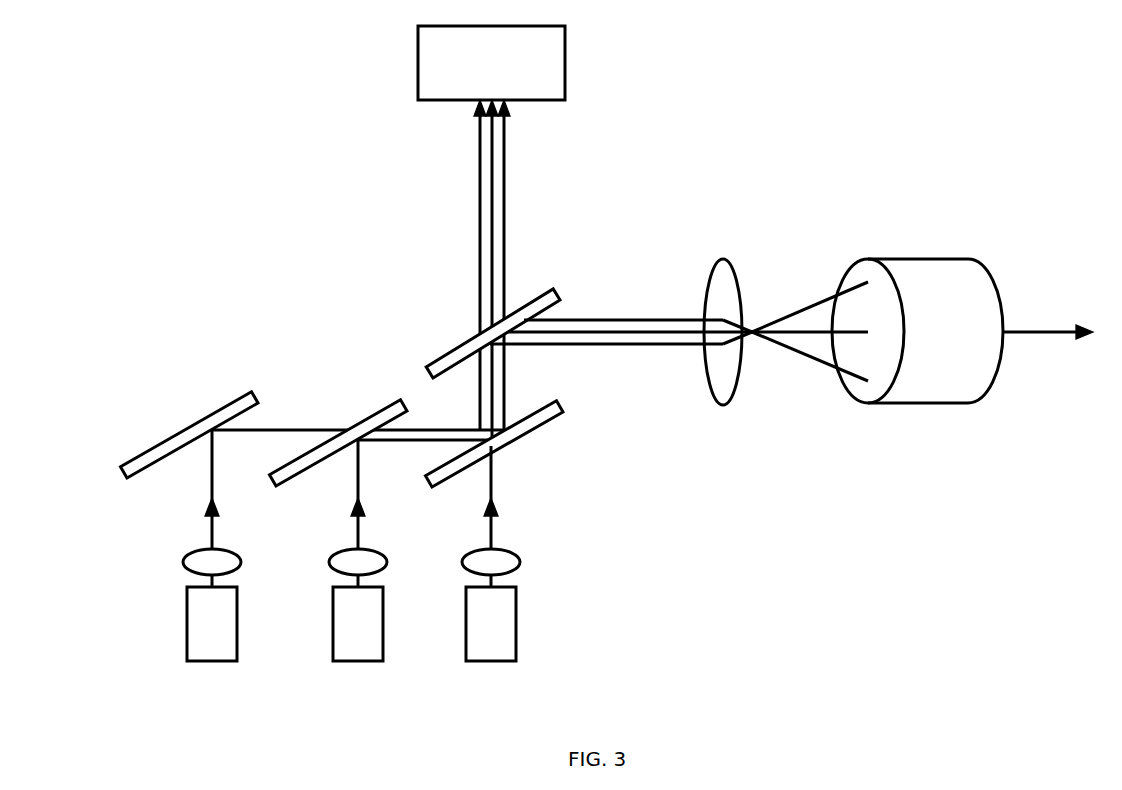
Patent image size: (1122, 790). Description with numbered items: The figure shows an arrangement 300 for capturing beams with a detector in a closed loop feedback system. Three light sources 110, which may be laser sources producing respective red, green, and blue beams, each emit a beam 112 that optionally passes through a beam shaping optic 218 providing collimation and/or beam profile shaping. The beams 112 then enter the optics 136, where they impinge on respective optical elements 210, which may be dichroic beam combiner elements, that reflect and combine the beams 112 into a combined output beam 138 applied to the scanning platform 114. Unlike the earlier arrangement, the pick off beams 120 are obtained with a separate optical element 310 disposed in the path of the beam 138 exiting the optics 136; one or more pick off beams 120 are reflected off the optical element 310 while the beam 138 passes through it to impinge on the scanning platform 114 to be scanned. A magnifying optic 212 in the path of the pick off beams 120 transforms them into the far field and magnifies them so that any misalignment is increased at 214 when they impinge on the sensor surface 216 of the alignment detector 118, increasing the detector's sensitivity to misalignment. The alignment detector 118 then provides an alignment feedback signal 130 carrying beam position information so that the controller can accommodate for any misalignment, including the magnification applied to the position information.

The arrangement 300 is at (1006, 60).
The scanning platform 114 is at (565, 45).
The combined output beam 138 is at (505, 210).
The optics 136 is at (158, 374).
The optical elements 210 is at (255, 396).
The optical element 310 is at (558, 298).
The pick off beams 120 is at (648, 316).
The magnifying optic 212 is at (738, 282).
The magnified misalignment region 214 is at (798, 284).
The alignment detector 118 is at (942, 259).
The sensor surface 216 is at (860, 392).
The alignment feedback signal 130 is at (1040, 332).
The beam 112 is at (212, 491).
The beam shaping optic 218 is at (240, 561).
The light sources 110 is at (212, 661).